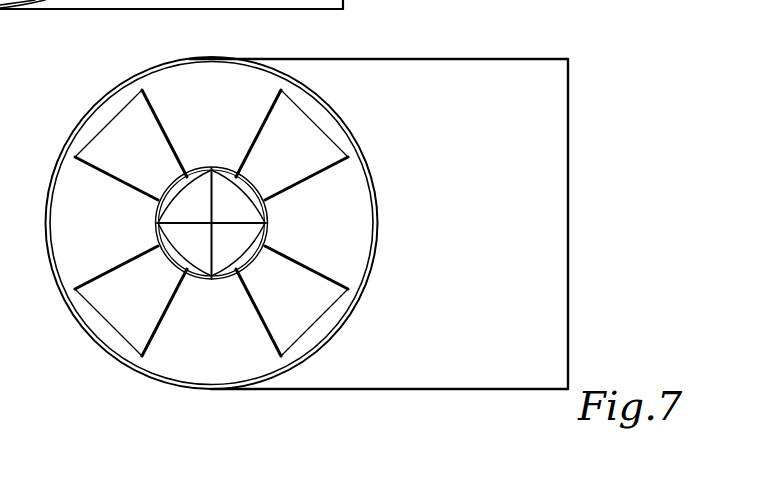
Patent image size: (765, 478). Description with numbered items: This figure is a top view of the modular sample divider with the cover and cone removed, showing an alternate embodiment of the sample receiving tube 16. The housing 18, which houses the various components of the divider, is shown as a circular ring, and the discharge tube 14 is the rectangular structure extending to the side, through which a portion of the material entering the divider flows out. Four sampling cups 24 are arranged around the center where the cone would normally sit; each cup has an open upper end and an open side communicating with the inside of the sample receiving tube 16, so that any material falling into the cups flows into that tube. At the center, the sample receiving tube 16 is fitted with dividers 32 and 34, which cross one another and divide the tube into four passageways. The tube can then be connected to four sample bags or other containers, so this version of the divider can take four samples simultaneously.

The discharge tube 14 is at (480, 64).
The sample receiving tube 16 is at (193, 188).
The housing 18 is at (364, 159).
The sampling cups 24 is at (120, 123).
The divider 32 is at (210, 207).
The divider 34 is at (241, 222).